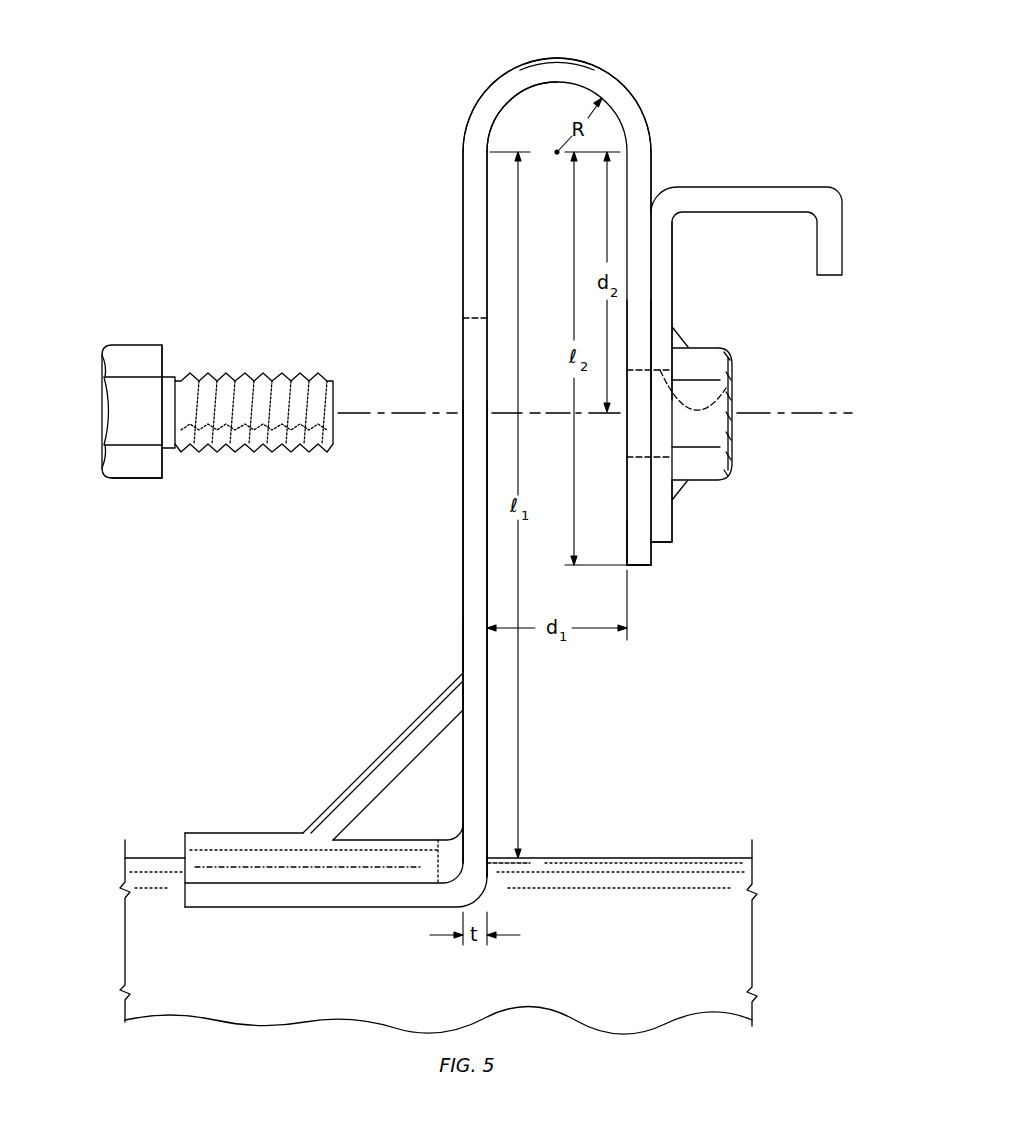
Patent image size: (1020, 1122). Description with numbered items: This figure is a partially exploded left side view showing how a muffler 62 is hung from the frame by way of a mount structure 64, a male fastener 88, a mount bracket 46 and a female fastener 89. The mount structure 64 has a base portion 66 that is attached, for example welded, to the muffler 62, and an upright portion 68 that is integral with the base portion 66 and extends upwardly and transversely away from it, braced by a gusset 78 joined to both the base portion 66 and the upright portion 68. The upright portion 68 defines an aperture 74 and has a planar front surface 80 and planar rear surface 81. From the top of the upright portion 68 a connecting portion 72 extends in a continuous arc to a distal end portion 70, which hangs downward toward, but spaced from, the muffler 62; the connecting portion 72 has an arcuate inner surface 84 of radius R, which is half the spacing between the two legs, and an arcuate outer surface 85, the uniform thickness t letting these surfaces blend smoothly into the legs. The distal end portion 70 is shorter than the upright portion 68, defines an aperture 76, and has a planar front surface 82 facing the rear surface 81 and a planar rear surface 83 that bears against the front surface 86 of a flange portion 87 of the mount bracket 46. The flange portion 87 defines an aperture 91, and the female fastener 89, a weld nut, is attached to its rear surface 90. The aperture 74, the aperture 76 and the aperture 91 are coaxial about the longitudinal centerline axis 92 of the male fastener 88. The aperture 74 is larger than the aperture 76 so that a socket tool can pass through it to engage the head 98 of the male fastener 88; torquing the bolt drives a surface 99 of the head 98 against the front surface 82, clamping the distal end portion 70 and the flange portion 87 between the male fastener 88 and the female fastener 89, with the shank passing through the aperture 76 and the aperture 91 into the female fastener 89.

The mount bracket 46 is at (763, 152).
The muffler 62 is at (636, 852).
The mount structure 64 is at (448, 182).
The base portion 66 is at (240, 833).
The upright portion 68 is at (444, 584).
The distal end portion 70 is at (640, 585).
The connecting portion 72 is at (613, 65).
The aperture 74 is at (470, 511).
The aperture 76 is at (640, 457).
The gusset 78 is at (383, 753).
The front surface 80 is at (462, 652).
The rear surface 81 is at (488, 556).
The front surface 82 is at (627, 553).
The rear surface 83 is at (652, 565).
The arcuate inner surface 84 is at (515, 88).
The arcuate outer surface 85 is at (563, 58).
The front surface 86 is at (648, 266).
The flange portion 87 is at (688, 288).
The male fastener 88 is at (160, 327).
The female fastener 89 is at (735, 440).
The rear surface 90 is at (675, 513).
The aperture 91 is at (736, 384).
The longitudinal centerline axis 92 is at (398, 418).
The head 98 is at (137, 481).
The surface 99 is at (165, 363).